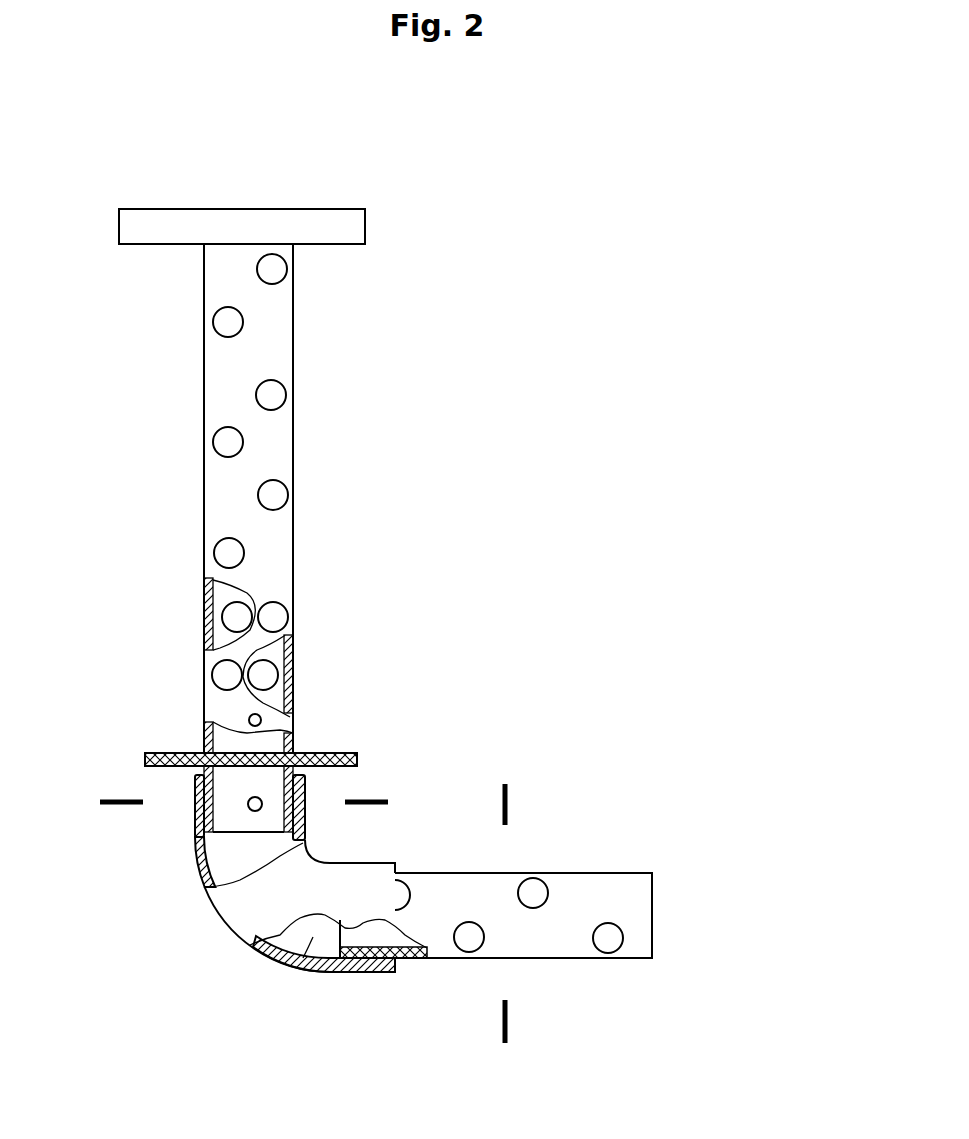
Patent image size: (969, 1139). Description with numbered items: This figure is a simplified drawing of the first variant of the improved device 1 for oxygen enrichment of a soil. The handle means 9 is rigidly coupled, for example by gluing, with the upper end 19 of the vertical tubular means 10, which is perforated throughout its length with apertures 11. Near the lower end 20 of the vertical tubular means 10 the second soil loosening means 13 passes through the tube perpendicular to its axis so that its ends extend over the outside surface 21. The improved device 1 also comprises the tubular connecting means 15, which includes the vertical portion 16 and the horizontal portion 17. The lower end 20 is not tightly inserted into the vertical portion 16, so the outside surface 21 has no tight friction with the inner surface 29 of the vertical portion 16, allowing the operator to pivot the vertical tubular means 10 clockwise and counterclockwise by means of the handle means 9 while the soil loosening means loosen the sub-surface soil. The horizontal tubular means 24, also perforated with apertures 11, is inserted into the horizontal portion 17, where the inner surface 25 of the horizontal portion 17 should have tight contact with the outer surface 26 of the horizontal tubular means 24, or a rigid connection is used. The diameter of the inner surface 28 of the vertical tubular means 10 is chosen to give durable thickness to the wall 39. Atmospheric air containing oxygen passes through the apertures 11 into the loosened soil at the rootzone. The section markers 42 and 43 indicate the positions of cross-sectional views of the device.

The improved device 1 is at (520, 507).
The handle means 9 is at (330, 220).
The vertical tubular means 10 is at (283, 347).
The apertures 11 is at (277, 493).
The second soil loosening means 13 is at (357, 760).
The tubular connecting means 15 is at (292, 965).
The vertical portion 16 is at (184, 801).
The horizontal portion 17 is at (352, 984).
The upper end 19 is at (316, 527).
The lower end 20 is at (198, 734).
The outside surface 21 is at (293, 550).
The horizontal tubular means 24 is at (578, 885).
The inner surface 25 is at (382, 972).
The outer surface 26 is at (518, 872).
The inner surface 28 is at (232, 586).
The inner surface 29 is at (290, 843).
The wall 39 is at (288, 668).
The section line 42 is at (109, 792).
The section line 43 is at (476, 790).